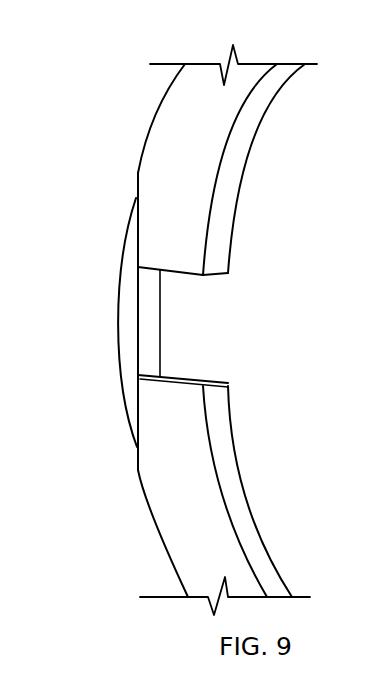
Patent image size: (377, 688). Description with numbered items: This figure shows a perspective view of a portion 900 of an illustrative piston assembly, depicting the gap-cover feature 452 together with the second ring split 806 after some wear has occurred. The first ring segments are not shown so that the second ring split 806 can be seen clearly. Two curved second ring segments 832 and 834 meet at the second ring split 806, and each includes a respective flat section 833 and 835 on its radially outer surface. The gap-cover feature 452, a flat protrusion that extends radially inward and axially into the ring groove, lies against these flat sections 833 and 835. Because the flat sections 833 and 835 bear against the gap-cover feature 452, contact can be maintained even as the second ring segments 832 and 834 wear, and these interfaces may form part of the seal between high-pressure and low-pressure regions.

The portion of piston assembly 900 is at (288, 50).
The second ring segment 832 is at (140, 158).
The flat section 833 is at (110, 190).
The gap-cover feature 452 is at (120, 330).
The second ring split 806 is at (245, 277).
The flat section 835 is at (113, 378).
The second ring segment 834 is at (148, 512).